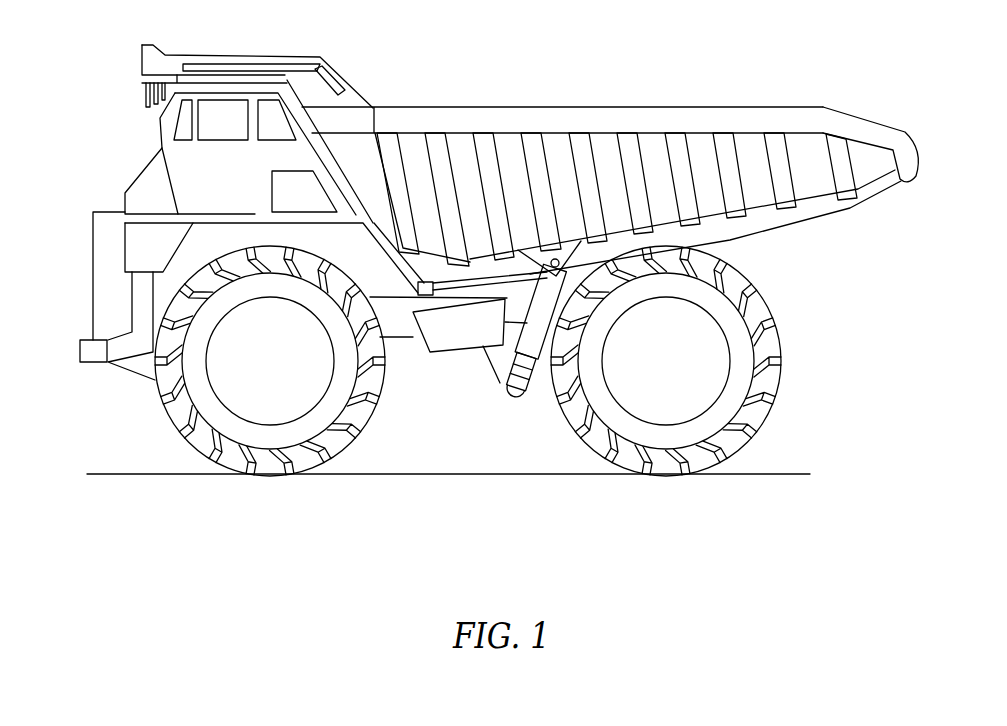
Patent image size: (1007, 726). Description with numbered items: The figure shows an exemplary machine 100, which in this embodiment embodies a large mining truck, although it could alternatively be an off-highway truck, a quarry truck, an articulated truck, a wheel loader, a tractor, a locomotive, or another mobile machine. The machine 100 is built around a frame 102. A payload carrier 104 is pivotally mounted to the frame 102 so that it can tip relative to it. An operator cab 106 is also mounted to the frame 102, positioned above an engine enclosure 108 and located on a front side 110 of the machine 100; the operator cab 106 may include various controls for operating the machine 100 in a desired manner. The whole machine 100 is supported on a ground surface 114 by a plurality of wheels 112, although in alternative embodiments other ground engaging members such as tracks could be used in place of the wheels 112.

The machine 100 is at (871, 48).
The frame 102 is at (402, 325).
The payload carrier 104 is at (712, 116).
The operator cab 106 is at (160, 125).
The engine enclosure 108 is at (93, 283).
The front side 110 is at (91, 182).
The wheels 112 is at (378, 404).
The ground surface 114 is at (142, 472).